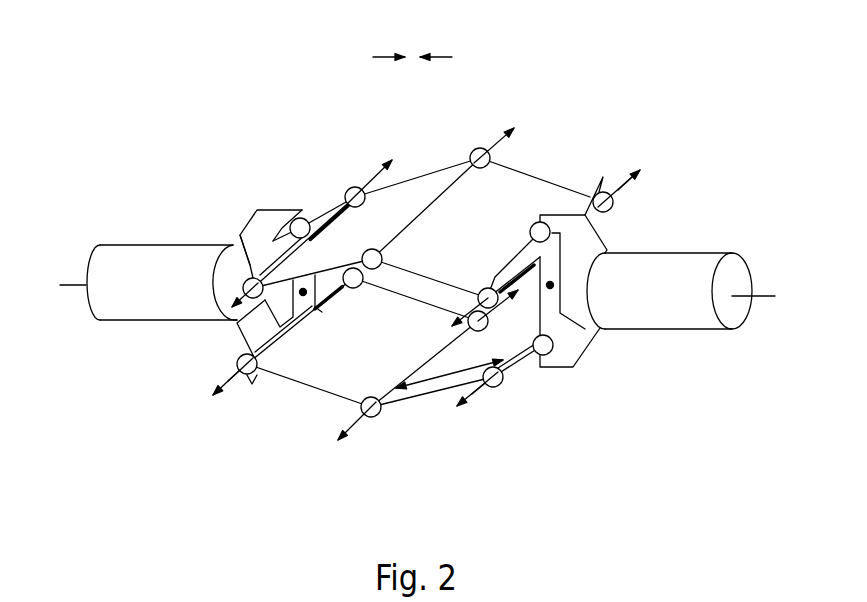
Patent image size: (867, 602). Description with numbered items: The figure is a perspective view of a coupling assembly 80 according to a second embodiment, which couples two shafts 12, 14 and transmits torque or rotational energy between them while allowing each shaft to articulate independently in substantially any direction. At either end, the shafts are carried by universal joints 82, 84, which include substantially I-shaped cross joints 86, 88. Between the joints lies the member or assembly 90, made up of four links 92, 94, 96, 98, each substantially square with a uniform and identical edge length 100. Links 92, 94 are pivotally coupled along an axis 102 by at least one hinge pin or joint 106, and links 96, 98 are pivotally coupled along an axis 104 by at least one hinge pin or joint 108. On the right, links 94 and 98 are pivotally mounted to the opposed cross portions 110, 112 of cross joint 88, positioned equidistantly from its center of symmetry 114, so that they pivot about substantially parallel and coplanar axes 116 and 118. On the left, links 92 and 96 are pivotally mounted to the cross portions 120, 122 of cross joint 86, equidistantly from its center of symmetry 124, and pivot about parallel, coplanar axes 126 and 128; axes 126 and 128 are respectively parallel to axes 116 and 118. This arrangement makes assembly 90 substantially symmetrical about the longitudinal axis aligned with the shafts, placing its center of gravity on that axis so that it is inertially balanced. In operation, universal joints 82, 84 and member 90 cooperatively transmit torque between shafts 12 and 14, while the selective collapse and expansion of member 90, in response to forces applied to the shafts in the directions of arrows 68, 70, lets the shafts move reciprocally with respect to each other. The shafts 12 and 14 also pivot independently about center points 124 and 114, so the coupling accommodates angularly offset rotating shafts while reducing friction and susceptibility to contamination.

The shaft 12 is at (147, 242).
The shaft 14 is at (690, 253).
The arrow 68 is at (385, 53).
The arrow 70 is at (440, 53).
The assembly 80 is at (212, 162).
The universal joint 82 is at (259, 205).
The universal joint 84 is at (580, 371).
The cross joint 86 is at (328, 195).
The cross joint 88 is at (594, 186).
The member or assembly 90 is at (262, 398).
The link 92 is at (418, 178).
The link 94 is at (519, 177).
The link 96 is at (276, 386).
The link 98 is at (497, 361).
The edge length 100 is at (418, 392).
The axis 102 is at (500, 130).
The axis 104 is at (357, 430).
The hinge pin or joint 106 is at (477, 149).
The hinge pin or joint 108 is at (371, 418).
The cross portion 110 is at (613, 164).
The cross portion 112 is at (488, 386).
The center of symmetry 114 is at (550, 285).
The axis 116 is at (642, 185).
The axis 118 is at (480, 384).
The cross portion 120 is at (252, 263).
The cross portion 122 is at (251, 385).
The center of symmetry 124 is at (300, 292).
The axis 126 is at (347, 186).
The axis 128 is at (233, 375).